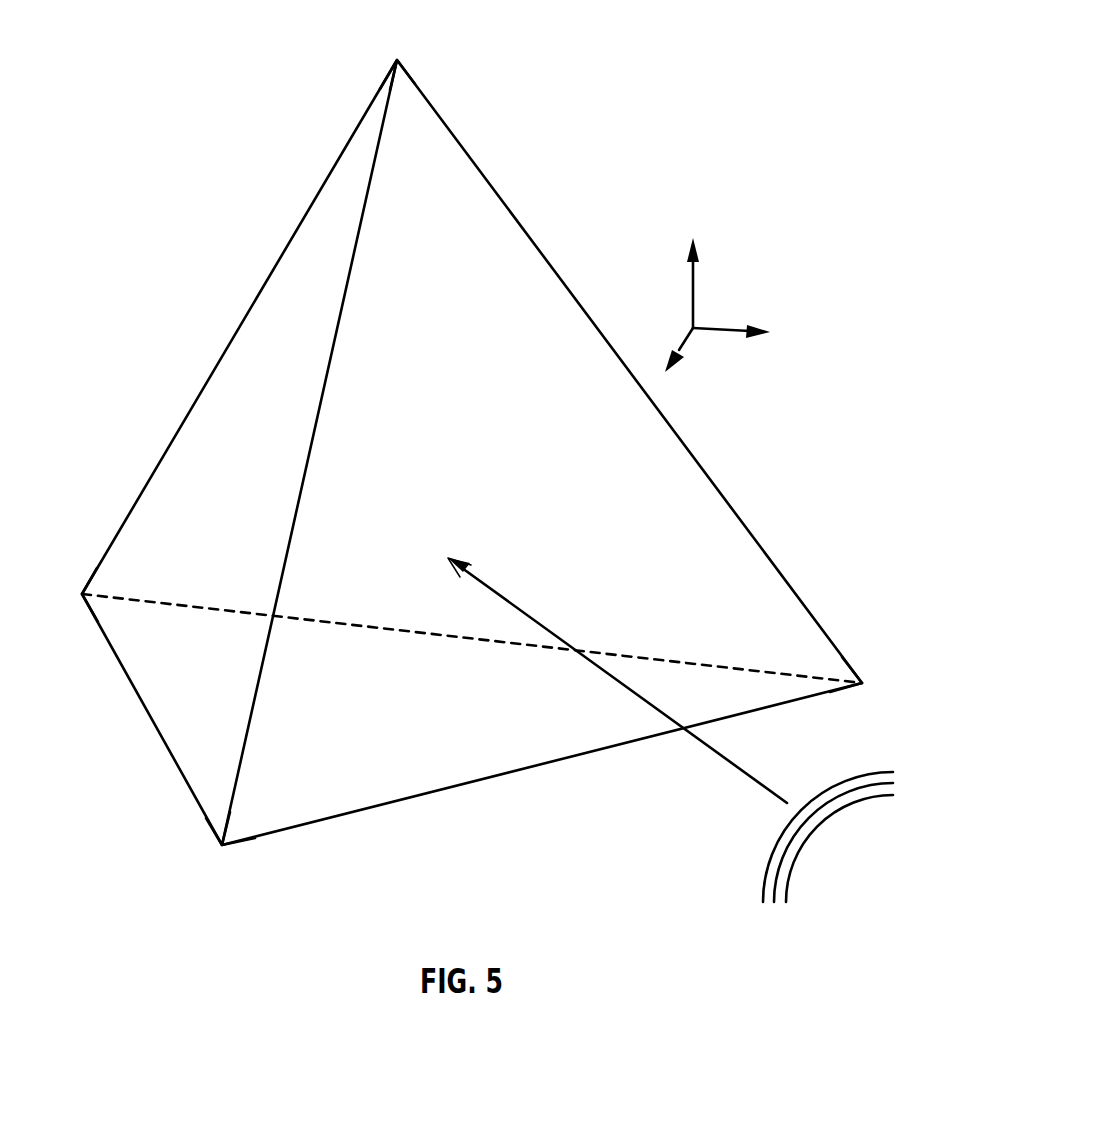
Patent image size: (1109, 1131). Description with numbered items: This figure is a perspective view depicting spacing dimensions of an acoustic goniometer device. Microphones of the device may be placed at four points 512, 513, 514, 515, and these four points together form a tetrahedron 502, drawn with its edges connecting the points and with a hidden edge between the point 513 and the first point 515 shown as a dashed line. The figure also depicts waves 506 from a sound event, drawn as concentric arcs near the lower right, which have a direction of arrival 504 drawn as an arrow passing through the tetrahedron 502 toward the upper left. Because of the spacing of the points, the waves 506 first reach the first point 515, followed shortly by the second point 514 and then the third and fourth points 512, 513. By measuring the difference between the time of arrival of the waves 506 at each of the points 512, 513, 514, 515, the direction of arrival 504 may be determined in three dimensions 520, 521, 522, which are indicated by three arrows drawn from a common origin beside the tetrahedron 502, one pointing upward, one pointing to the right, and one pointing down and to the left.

The tetrahedron 502 is at (240, 326).
The direction of arrival 504 is at (500, 592).
The waves 506 is at (767, 856).
The point 512 is at (397, 60).
The point 513 is at (82, 594).
The second point 514 is at (222, 845).
The first point 515 is at (862, 684).
The dimension 520 is at (690, 285).
The dimension 521 is at (683, 350).
The dimension 522 is at (733, 327).